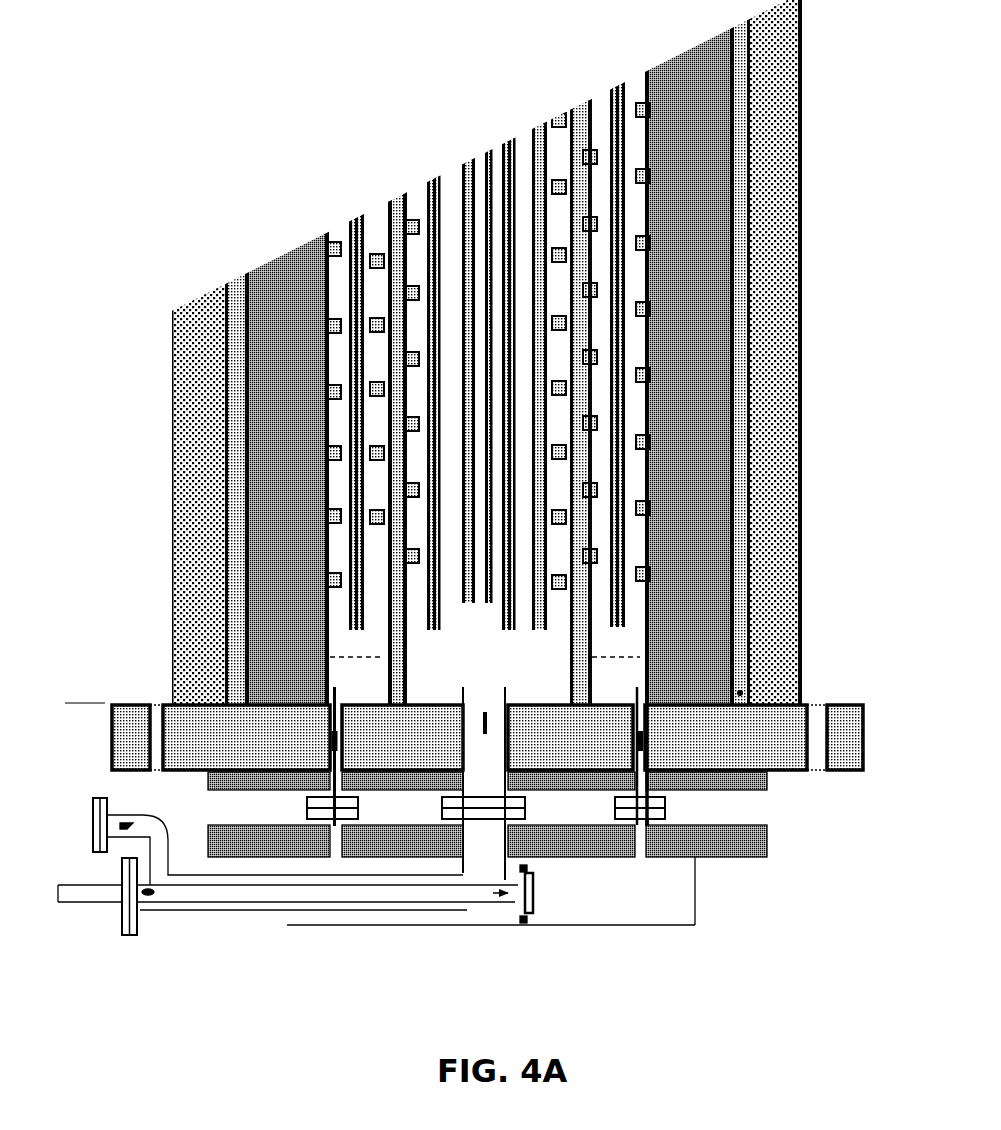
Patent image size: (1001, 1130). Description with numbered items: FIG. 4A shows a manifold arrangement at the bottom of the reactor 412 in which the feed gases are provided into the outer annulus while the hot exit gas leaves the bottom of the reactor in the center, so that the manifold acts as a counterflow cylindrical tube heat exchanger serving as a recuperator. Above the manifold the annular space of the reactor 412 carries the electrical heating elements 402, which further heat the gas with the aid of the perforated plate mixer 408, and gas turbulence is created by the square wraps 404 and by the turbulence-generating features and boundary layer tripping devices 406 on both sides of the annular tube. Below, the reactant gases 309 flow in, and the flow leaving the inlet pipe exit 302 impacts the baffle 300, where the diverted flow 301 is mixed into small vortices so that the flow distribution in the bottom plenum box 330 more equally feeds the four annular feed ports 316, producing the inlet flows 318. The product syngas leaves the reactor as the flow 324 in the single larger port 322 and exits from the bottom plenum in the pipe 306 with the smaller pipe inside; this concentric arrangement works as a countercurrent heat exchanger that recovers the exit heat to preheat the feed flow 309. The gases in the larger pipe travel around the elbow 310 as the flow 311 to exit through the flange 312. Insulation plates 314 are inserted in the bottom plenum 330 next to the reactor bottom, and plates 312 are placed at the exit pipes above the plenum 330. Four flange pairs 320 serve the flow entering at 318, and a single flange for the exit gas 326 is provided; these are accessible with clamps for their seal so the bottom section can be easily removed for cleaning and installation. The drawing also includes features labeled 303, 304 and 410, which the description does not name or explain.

The baffle 300 is at (537, 896).
The diverted flow 301 is at (530, 868).
The inlet pipe exit 302 is at (514, 898).
The inlet pipe 303 is at (135, 920).
The flow passage 304 is at (492, 905).
The pipe 306 is at (345, 850).
The reactant gases 309 is at (152, 896).
The elbow 310 is at (160, 822).
The flow 311 is at (126, 822).
The flange 312 is at (98, 798).
The insulation plates 314 is at (214, 792).
The annular feed ports 316 is at (415, 823).
The inlet flows 318 is at (332, 741).
The flange pairs 320 is at (665, 806).
The single larger port 322 is at (486, 748).
The flow 324 is at (482, 722).
The flange for the exit gas 326 is at (520, 826).
The bottom plenum box 330 is at (697, 890).
The electrical heating elements 402 is at (627, 173).
The square wraps 404 is at (646, 318).
The boundary layer tripping devices 406 is at (597, 490).
The perforated plate mixer 408 is at (609, 656).
The insulation 410 is at (776, 622).
The reactor 412 is at (741, 678).